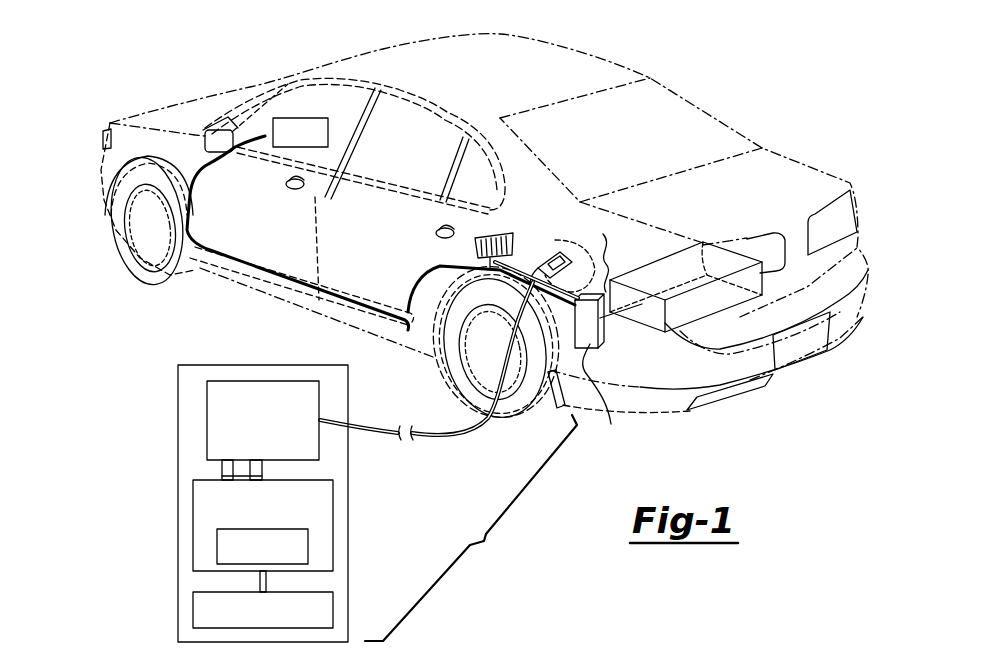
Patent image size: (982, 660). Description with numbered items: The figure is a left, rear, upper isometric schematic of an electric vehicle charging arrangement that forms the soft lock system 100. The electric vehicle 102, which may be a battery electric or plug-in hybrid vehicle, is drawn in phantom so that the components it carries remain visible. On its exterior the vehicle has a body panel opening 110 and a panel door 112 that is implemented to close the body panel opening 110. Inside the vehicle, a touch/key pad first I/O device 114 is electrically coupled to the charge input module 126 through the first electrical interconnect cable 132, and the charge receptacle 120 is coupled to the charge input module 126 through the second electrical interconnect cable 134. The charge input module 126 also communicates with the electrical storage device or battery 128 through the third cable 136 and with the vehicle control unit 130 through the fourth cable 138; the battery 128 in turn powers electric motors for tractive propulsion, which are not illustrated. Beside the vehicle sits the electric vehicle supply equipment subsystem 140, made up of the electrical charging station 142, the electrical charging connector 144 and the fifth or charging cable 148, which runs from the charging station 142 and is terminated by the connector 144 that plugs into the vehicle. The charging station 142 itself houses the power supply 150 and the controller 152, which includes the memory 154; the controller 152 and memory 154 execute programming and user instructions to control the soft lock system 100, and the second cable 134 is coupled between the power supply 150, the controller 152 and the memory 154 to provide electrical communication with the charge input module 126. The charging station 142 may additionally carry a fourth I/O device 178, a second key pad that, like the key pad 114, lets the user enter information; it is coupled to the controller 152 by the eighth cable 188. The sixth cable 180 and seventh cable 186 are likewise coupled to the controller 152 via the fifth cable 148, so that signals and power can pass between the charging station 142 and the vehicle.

The soft lock system 100 is at (575, 40).
The electric vehicle 102 is at (652, 72).
The body panel opening 110 is at (580, 201).
The panel door 112 is at (650, 270).
The touch/key pad (first I/O) device 114 is at (512, 225).
The charge receptacle 120 is at (582, 265).
The charge input module 126 is at (604, 397).
The electrical storage device (battery) 128 is at (748, 262).
The vehicle control unit 130 is at (300, 118).
The first electrical interconnect cable 132 is at (473, 248).
The second electrical interconnect cable 134 is at (603, 234).
The third electrical interconnect cable 136 is at (612, 330).
The fourth electrical interconnect cable 138 is at (247, 262).
The electric vehicle supply equipment (EVSE) subsystem 140 is at (471, 528).
The electrical charging station 142 is at (178, 510).
The electrical charging connector 144 is at (566, 306).
The fifth electrical interconnect cable (charging cable) 148 is at (448, 443).
The power supply 150 is at (207, 420).
The controller 152 is at (333, 525).
The memory 154 is at (217, 545).
The fourth I/O device 178 is at (193, 610).
The sixth cable 180 is at (222, 472).
The seventh cable 186 is at (222, 476).
The eighth cable 188 is at (262, 472).